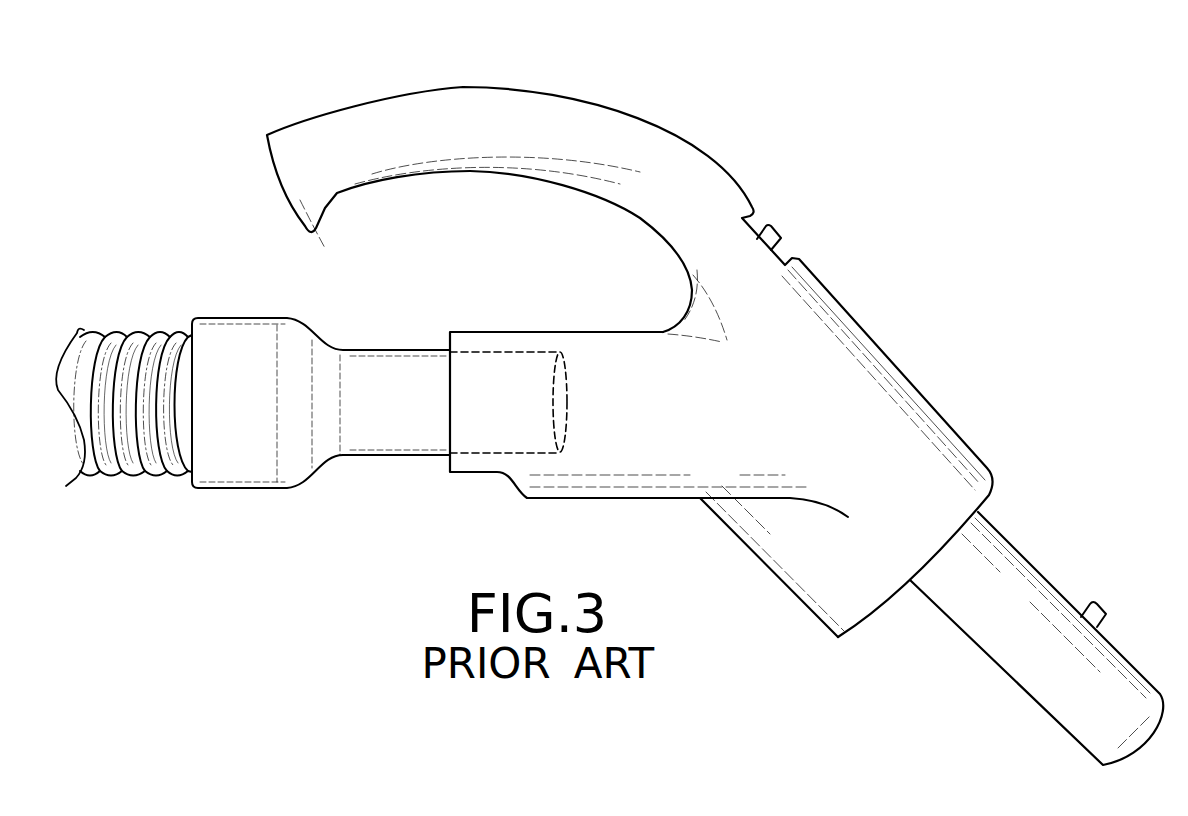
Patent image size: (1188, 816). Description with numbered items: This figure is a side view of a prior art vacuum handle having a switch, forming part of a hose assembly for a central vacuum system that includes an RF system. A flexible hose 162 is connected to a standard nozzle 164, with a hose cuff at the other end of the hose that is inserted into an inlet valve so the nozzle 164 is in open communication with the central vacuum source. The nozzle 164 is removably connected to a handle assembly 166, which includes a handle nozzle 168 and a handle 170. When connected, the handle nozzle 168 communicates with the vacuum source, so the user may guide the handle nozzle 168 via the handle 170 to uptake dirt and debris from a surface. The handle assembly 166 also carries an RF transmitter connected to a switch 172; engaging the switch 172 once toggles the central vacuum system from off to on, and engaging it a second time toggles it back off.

The hose 162 is at (112, 332).
The nozzle 164 is at (398, 352).
The handle assembly 166 is at (858, 290).
The handle nozzle 168 is at (1050, 583).
The handle 170 is at (473, 107).
The switch 172 is at (780, 233).